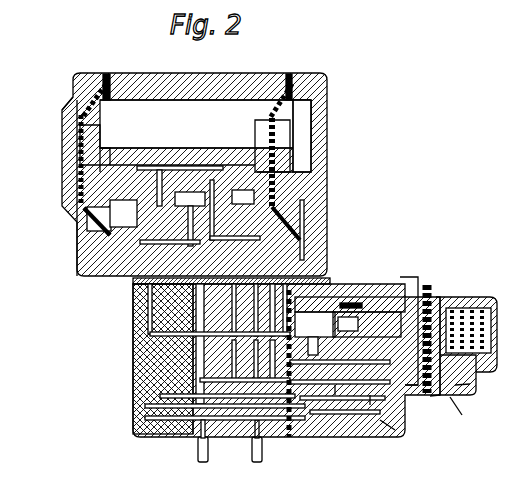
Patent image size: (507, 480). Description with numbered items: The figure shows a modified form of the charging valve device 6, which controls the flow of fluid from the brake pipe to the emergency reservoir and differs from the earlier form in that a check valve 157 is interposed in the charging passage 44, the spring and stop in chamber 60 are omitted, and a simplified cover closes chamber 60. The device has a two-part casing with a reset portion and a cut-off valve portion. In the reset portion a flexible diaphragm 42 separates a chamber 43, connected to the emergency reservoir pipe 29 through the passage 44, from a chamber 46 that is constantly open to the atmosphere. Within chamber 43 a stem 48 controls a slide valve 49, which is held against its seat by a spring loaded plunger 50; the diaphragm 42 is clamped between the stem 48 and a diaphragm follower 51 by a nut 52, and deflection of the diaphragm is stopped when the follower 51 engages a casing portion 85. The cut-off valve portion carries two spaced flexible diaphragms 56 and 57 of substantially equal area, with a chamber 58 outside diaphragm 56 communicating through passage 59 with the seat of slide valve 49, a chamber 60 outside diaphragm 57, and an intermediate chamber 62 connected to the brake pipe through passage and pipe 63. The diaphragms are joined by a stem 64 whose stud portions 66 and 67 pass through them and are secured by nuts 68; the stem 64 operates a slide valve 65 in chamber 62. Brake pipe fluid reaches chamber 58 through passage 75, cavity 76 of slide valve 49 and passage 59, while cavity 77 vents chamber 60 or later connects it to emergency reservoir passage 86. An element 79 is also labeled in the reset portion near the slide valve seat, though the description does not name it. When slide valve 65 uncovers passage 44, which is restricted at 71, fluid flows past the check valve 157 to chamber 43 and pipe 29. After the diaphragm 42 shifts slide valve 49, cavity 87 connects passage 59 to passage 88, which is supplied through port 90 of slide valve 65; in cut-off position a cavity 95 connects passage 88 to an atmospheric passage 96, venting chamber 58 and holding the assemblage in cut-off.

The charging valve device 6 is at (83, 66).
The emergency reservoir pipe 29 is at (200, 445).
The flexible diaphragm 42 is at (430, 285).
The chamber 43 is at (413, 277).
The branch passage 44 is at (200, 308).
The chamber 46 is at (458, 297).
The stem 48 is at (372, 300).
The slide valve 49 is at (468, 380).
The spring loaded plunger 50 is at (352, 303).
The diaphragm follower 51 is at (440, 396).
The nut 52 is at (470, 317).
The flexible diaphragm 56 is at (96, 113).
The flexible diaphragm 57 is at (271, 98).
The chamber 58 is at (66, 108).
The passage 59 is at (170, 403).
The chamber 60 is at (302, 116).
The chamber 62 is at (143, 100).
The passage and pipe 63 is at (278, 222).
The stem 64 is at (126, 150).
The slide valve 65 is at (196, 196).
The stud portion 66 is at (70, 168).
The stud portion 67 is at (294, 166).
The nut 68 is at (80, 147).
The restriction 71 is at (123, 213).
The passage 75 is at (392, 432).
The cavity 76 is at (422, 388).
The cavity 77 is at (330, 320).
The chamber 79 is at (310, 312).
The casing portion 85 is at (455, 400).
The passage 86 is at (338, 400).
The cavity 87 is at (370, 312).
The passage 88 is at (374, 408).
The port 90 is at (170, 166).
The cavity 95 is at (202, 166).
The atmospheric passage 96 is at (244, 197).
The check valve 157 is at (133, 280).